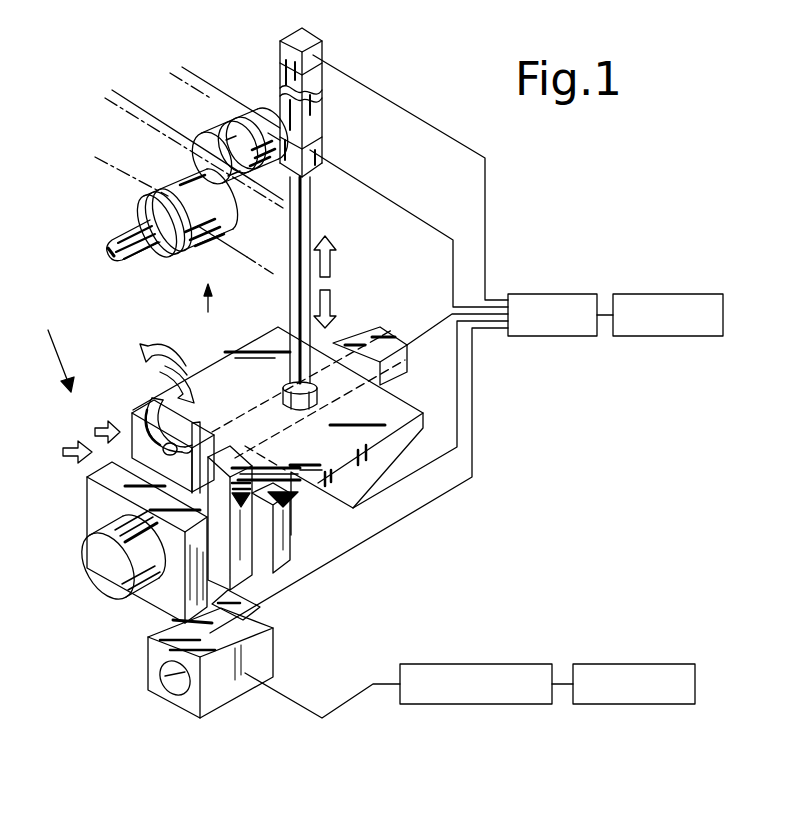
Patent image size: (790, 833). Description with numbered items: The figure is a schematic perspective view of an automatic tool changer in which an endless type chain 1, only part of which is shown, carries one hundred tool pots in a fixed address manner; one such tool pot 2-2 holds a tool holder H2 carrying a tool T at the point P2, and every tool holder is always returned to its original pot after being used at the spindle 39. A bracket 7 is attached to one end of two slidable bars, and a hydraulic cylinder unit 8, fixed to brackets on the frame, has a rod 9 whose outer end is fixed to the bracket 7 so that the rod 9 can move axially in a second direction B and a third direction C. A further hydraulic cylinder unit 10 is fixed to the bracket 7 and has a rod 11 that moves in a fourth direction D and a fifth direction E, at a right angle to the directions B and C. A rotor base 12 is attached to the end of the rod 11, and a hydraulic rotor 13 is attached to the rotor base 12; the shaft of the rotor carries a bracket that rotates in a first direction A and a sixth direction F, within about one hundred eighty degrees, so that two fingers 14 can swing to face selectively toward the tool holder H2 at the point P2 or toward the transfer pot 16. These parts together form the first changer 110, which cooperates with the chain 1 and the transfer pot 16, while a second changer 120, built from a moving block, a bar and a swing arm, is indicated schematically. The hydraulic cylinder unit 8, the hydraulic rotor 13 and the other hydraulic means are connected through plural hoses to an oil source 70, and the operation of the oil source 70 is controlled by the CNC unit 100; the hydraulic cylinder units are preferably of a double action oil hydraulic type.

The chain 1 is at (227, 125).
The bracket 7 is at (379, 448).
The hydraulic cylinder unit 8 is at (312, 122).
The rod 9 is at (311, 188).
The hydraulic cylinder unit 10 is at (383, 336).
The rod 11 is at (212, 455).
The rotor base 12 is at (93, 514).
The hydraulic rotor 13 is at (92, 563).
The fingers 14 is at (150, 402).
The transfer pot 16 is at (243, 690).
The spindle 39 is at (630, 705).
The oil source 70 is at (553, 337).
The CNC unit 100 is at (655, 337).
The first changer 110 is at (52, 347).
The second changer 120 is at (478, 705).
The tool T is at (112, 240).
The tool holder H2 is at (157, 257).
The tool pot 2-2 is at (200, 232).
The point P2 is at (210, 311).
The first direction A is at (190, 384).
The second direction B is at (334, 266).
The third direction C is at (333, 310).
The fourth direction D is at (74, 440).
The fifth direction E is at (101, 424).
The sixth direction F is at (165, 356).